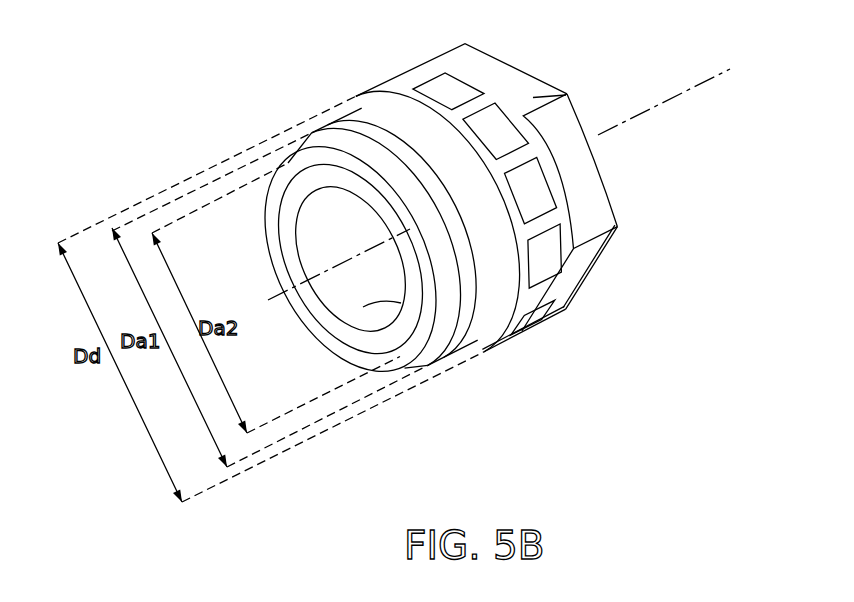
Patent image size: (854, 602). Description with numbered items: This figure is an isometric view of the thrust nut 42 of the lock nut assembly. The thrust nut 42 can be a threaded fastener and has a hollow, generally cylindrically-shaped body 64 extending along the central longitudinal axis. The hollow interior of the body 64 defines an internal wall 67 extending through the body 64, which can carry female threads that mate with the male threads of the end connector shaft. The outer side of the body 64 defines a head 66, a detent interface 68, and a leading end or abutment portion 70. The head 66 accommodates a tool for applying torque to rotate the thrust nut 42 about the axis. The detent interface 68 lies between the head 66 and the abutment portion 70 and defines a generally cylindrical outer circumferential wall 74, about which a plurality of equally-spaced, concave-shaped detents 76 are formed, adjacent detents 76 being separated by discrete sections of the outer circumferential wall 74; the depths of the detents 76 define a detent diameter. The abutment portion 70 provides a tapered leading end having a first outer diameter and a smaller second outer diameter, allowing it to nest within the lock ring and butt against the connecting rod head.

The abutment portion 70 is at (270, 104).
The outer circumferential wall 74 is at (527, 157).
The detents 76 is at (440, 92).
The head 66 is at (640, 230).
The thrust nut 42 is at (606, 303).
The detent interface 68 is at (551, 341).
The body 64 is at (469, 381).
The internal wall 67 is at (363, 307).